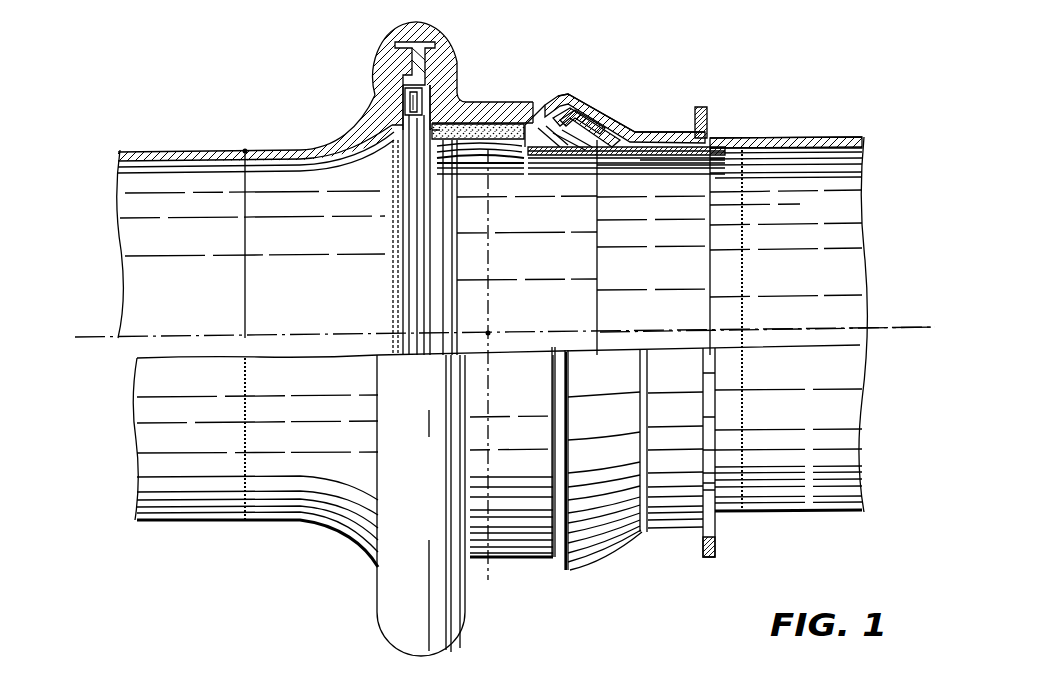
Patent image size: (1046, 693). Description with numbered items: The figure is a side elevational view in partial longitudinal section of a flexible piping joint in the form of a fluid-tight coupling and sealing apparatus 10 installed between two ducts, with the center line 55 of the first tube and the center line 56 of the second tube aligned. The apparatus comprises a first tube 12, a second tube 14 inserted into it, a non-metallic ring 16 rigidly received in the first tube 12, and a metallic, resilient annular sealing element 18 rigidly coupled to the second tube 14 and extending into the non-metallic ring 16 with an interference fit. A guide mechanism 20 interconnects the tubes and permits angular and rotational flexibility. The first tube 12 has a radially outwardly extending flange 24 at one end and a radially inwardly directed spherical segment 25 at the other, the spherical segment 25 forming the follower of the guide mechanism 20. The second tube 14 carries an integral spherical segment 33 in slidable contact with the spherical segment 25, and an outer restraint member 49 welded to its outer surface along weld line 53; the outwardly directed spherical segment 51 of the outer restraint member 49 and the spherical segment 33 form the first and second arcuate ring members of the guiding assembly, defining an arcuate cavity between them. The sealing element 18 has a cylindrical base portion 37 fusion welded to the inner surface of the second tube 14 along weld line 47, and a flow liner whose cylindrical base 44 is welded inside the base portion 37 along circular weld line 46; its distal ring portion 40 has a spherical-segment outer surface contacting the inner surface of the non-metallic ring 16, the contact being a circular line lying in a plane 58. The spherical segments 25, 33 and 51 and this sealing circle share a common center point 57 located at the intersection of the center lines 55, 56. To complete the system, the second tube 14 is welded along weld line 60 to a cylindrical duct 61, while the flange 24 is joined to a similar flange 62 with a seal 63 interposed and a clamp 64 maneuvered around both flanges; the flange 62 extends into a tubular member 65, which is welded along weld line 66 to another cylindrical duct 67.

The fluid-tight coupling and sealing apparatus 10 is at (567, 63).
The first tube 12 is at (485, 97).
The second tube 14 is at (728, 136).
The non-metallic ring 16 is at (504, 118).
The sealing element 18 is at (522, 153).
The guide mechanism 20 is at (607, 97).
The flange 24 is at (436, 47).
The spherical segment 25 is at (552, 145).
The spherical segment 33 is at (565, 148).
The cylindrical base portion 37 is at (718, 152).
The ring portion 40 is at (468, 153).
The cylindrical base 44 is at (613, 155).
The weld line 46 is at (668, 165).
The weld line 47 is at (670, 157).
The outer restraint member 49 is at (643, 130).
The spherical segment 51 is at (572, 100).
The weld line 53 is at (680, 142).
The center line 55 is at (907, 327).
The center line 56 is at (767, 329).
The center point 57 is at (489, 332).
The plane 58 is at (489, 241).
The weld line 60 is at (747, 418).
The cylindrical duct 61 is at (807, 513).
The flange 62 is at (418, 85).
The seal 63 is at (410, 167).
The clamp 64 is at (400, 22).
The tubular member 65 is at (318, 140).
The weld line 66 is at (247, 428).
The cylindrical duct 67 is at (208, 523).